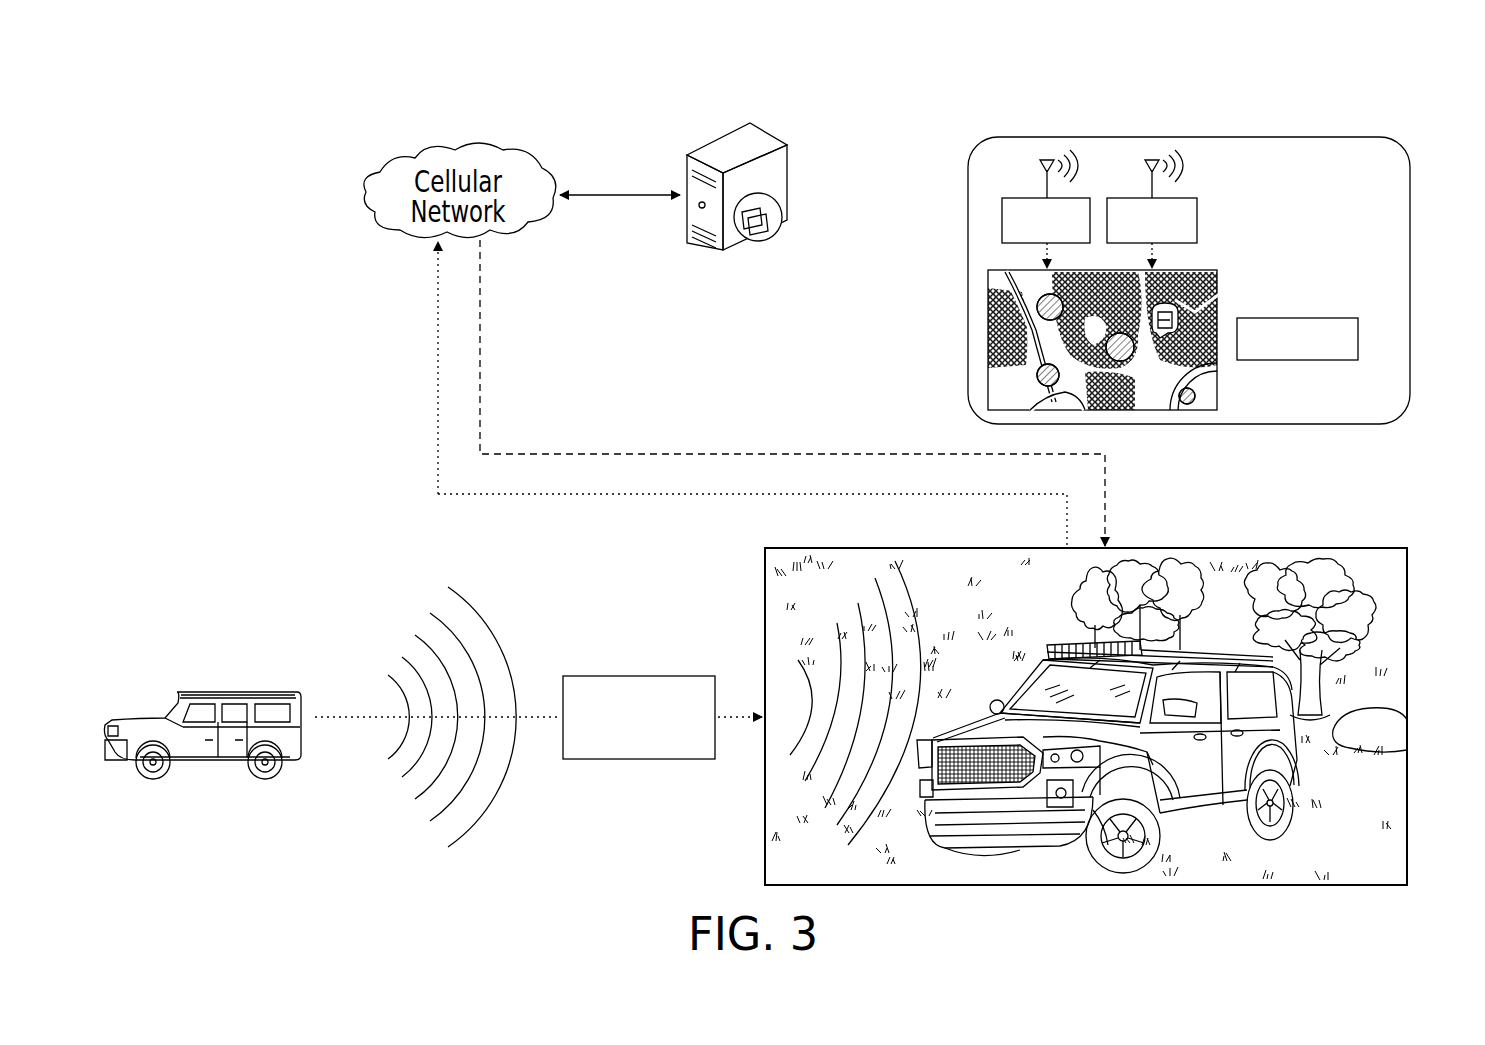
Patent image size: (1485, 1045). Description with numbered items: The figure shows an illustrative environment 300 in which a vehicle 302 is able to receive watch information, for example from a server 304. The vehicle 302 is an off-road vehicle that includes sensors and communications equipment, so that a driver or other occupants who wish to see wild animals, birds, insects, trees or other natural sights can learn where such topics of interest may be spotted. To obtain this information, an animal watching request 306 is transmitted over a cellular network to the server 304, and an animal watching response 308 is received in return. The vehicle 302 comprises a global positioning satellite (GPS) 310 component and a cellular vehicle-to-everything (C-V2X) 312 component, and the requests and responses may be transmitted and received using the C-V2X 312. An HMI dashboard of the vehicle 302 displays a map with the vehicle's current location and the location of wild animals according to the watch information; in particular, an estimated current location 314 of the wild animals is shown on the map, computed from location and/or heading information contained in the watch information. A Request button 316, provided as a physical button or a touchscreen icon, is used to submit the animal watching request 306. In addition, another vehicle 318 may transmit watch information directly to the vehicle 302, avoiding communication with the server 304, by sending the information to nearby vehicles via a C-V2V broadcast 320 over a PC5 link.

The environment 300 is at (1330, 70).
The vehicle 302 is at (998, 703).
The server 304 is at (790, 182).
The animal watching request 306 is at (440, 357).
The animal watching response 308 is at (763, 341).
The global positioning satellite (GPS) 310 is at (1087, 197).
The cellular vehicle-to-everything (C-V2X) 312 is at (1193, 197).
The estimated current location 314 is at (1195, 310).
The Request button 316 is at (1360, 343).
The vehicle 318 is at (280, 693).
The C-V2V broadcast 320 is at (667, 677).